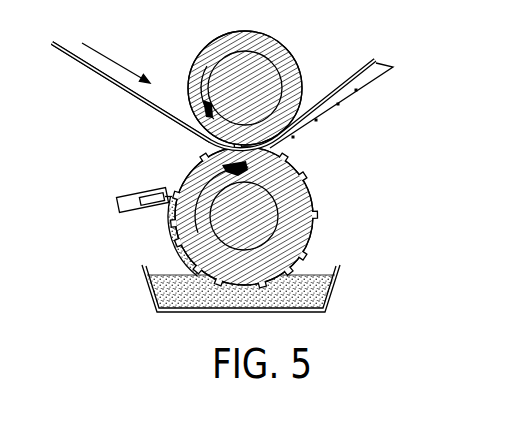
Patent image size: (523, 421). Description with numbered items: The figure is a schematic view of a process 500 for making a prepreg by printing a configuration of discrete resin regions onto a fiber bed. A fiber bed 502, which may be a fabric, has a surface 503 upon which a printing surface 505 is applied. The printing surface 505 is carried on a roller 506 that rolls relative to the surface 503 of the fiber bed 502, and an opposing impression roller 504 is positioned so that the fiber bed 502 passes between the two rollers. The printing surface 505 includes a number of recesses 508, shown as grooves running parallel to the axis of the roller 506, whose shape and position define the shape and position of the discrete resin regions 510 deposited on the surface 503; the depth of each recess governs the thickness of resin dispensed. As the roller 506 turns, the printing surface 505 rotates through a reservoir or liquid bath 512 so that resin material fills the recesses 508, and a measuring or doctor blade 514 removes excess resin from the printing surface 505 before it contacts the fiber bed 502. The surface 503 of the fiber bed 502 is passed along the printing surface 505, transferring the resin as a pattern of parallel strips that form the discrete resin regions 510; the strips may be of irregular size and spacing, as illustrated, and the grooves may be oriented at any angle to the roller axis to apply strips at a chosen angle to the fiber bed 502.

The process 500 is at (267, 171).
The fiber bed 502 is at (84, 62).
The surface 503 is at (113, 96).
The impression roller 504 is at (290, 55).
The printing surface 505 is at (289, 209).
The roller 506 is at (308, 183).
The recesses 508 is at (290, 167).
The discrete resin regions 510 is at (391, 68).
The liquid bath 512 is at (330, 290).
The doctor blade 514 is at (157, 193).